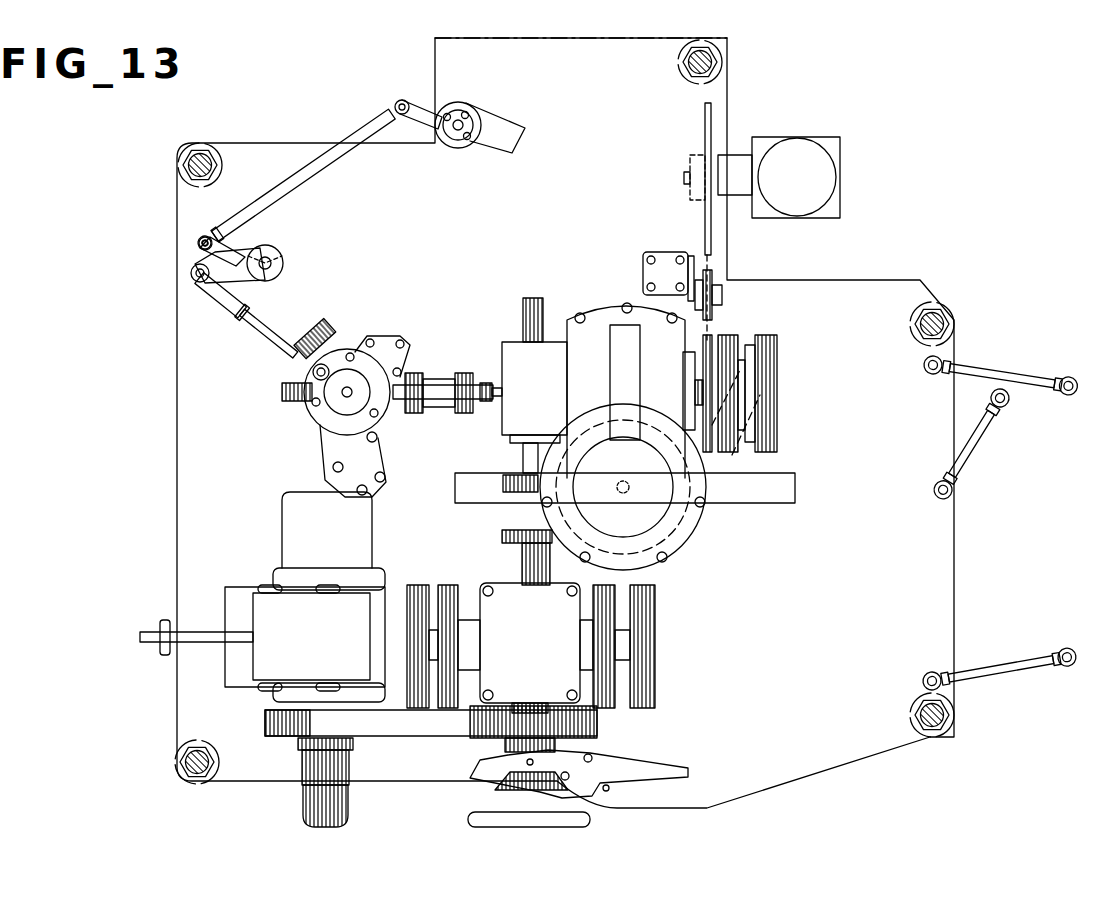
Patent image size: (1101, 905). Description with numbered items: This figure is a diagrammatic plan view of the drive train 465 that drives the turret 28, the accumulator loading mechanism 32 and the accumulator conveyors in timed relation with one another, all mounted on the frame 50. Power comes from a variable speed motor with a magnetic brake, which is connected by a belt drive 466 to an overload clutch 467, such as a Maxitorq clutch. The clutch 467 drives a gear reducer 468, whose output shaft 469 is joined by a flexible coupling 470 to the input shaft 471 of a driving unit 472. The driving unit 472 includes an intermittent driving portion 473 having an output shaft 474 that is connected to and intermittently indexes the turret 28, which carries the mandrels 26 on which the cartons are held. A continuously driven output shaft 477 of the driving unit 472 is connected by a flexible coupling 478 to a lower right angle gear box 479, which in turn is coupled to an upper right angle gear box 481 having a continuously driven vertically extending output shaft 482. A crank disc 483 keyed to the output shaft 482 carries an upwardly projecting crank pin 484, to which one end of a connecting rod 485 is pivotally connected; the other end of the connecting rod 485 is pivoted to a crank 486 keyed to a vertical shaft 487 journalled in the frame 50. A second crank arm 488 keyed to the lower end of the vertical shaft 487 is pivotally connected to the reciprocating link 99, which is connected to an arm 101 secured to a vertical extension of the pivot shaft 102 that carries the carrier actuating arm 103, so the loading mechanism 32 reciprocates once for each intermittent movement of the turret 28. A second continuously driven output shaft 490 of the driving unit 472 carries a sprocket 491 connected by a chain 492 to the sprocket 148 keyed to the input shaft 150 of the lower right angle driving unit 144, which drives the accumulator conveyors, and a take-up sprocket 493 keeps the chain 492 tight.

The mandrels 26 is at (615, 325).
The turret 28 is at (672, 507).
The accumulator loading mechanism 32 is at (520, 147).
The frame 50 is at (277, 135).
The reciprocating link 99 is at (300, 175).
The arm 101 is at (403, 100).
The pivot shaft 102 is at (462, 122).
The carrier actuating arm 103 is at (510, 131).
The lower right angle driving unit 144 is at (840, 168).
The sprocket 148 is at (712, 110).
The input shaft 150 is at (718, 160).
The drive train 465 is at (268, 525).
The belt drive 466 is at (438, 740).
The overload clutch 467 is at (490, 790).
The gear reducer 468 is at (531, 648).
The output shaft 469 is at (522, 559).
The flexible coupling 470 is at (525, 515).
The input shaft 471 is at (522, 458).
The driving unit 472 is at (534, 370).
The intermittent driving portion 473 is at (626, 390).
The output shaft 474 is at (638, 485).
The continuously driven output shaft 477 is at (486, 380).
The flexible coupling 478 is at (428, 378).
The lower right angle gear box 479 is at (285, 392).
The upper right angle gear box 481 is at (320, 345).
The output shaft 482 is at (346, 386).
The crank disc 483 is at (322, 418).
The crank pin 484 is at (300, 362).
The connecting rod 485 is at (260, 333).
The crank 486 is at (192, 266).
The vertical shaft 487 is at (270, 256).
The second crank arm 488 is at (232, 245).
The second continuously driven output shaft 490 is at (690, 375).
The sprocket 491 is at (710, 340).
The chain 492 is at (710, 262).
The take-up sprocket 493 is at (714, 282).